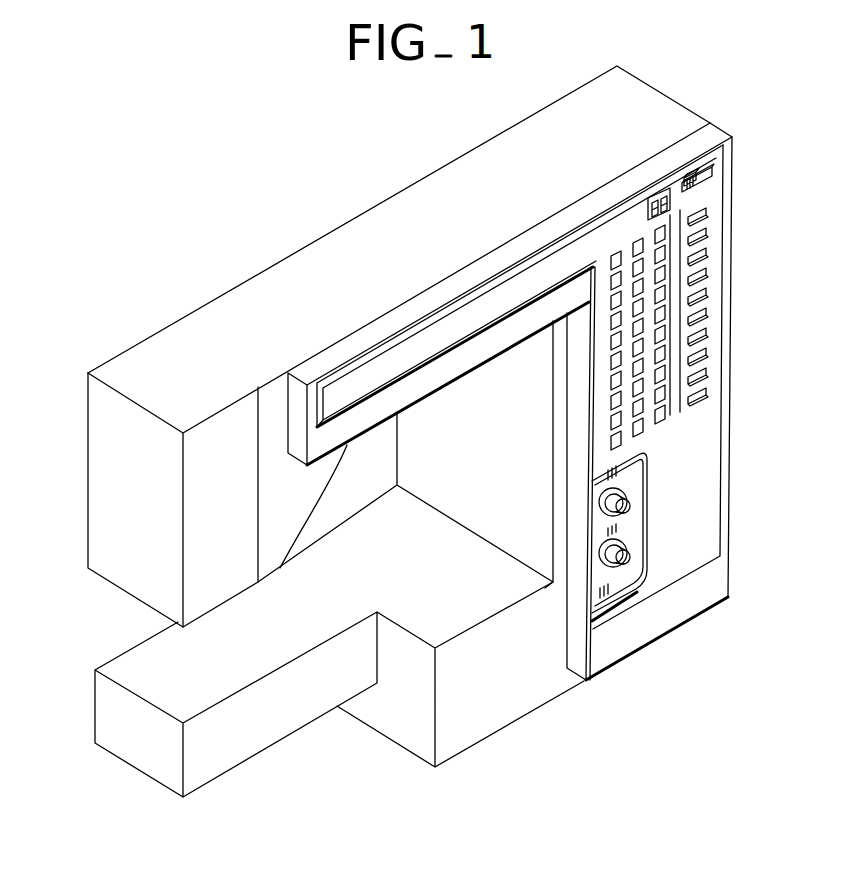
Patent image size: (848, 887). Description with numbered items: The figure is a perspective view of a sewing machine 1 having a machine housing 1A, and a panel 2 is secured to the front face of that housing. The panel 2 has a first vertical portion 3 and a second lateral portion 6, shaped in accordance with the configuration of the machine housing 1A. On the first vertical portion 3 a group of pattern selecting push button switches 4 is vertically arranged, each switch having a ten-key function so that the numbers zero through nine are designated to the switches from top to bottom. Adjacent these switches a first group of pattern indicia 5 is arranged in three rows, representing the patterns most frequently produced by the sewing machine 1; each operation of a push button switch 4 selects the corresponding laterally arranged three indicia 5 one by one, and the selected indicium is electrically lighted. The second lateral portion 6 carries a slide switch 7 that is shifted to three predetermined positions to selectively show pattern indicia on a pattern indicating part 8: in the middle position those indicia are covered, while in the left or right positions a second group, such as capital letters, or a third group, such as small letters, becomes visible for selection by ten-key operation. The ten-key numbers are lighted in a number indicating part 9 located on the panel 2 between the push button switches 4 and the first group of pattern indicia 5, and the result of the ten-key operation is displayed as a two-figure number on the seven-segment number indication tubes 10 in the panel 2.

The sewing machine 1 is at (395, 193).
The machine housing 1A is at (342, 232).
The panel 2 is at (716, 132).
The first vertical portion 3 is at (670, 568).
The pattern selecting push button switches 4 is at (694, 407).
The first group of pattern indicia 5 is at (612, 345).
The second lateral portion 6 is at (680, 186).
The slide switch 7 is at (697, 180).
The pattern indicating part 8 is at (418, 340).
The number indicating part 9 is at (672, 417).
The 7-segment number indication tubes 10 is at (648, 197).